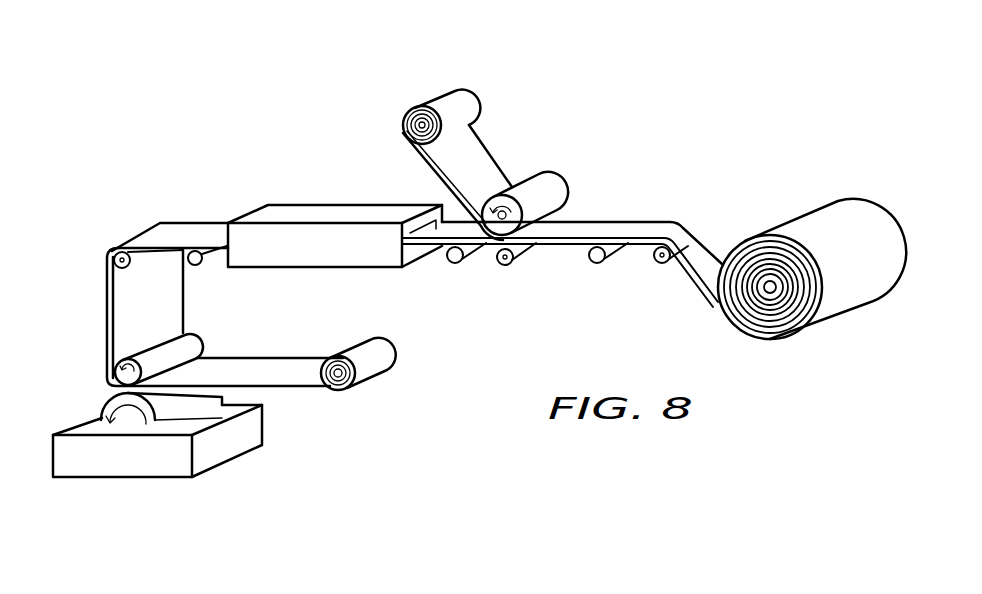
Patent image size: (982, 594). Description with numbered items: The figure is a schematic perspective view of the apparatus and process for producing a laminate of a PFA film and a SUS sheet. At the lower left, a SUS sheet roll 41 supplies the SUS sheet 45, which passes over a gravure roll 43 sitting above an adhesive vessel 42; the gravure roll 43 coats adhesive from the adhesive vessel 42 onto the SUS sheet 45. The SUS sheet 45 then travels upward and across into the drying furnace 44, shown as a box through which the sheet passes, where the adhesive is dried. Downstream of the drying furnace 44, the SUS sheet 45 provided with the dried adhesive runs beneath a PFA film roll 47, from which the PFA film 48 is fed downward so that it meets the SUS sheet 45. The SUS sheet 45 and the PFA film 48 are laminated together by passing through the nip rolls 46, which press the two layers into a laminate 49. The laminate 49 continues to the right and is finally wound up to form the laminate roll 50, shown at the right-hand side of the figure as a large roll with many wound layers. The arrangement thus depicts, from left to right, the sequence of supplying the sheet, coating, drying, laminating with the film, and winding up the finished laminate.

The SUS sheet roll 41 is at (355, 352).
The adhesive vessel 42 is at (155, 460).
The gravure roll 43 is at (106, 393).
The drying furnace 44 is at (331, 208).
The SUS sheet 45 is at (108, 300).
The nip rolls 46 is at (528, 252).
The PFA film roll 47 is at (445, 105).
The PFA film 48 is at (487, 173).
The laminate 49 is at (645, 225).
The laminate roll 50 is at (812, 220).